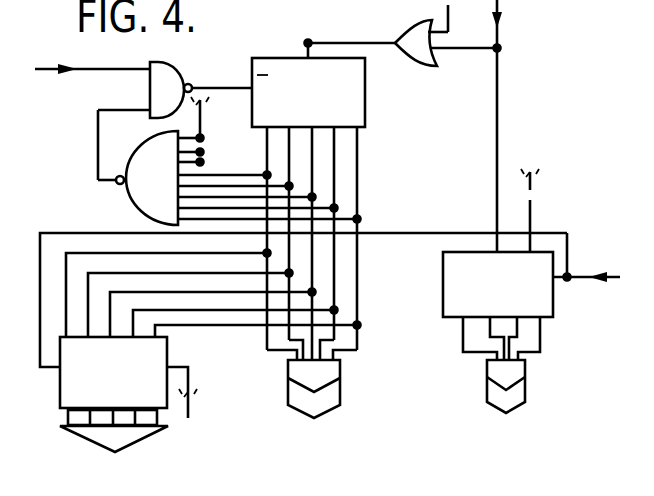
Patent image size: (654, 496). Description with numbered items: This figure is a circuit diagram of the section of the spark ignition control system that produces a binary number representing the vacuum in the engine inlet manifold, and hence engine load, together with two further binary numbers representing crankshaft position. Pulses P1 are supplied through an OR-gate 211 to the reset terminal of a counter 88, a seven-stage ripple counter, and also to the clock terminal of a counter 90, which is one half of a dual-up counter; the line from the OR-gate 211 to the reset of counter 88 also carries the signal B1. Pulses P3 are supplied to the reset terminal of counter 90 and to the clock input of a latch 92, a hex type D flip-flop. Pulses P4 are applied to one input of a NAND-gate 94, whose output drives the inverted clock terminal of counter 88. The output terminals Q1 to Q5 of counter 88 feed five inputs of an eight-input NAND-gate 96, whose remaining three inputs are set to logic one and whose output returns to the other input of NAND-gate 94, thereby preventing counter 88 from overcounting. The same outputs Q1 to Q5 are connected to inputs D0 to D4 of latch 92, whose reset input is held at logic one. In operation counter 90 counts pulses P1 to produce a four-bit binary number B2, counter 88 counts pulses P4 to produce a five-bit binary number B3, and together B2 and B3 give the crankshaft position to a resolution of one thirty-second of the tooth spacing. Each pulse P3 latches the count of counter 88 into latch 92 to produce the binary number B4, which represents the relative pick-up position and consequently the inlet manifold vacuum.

The counter 88 is at (287, 68).
The counter 90 is at (443, 277).
The latch 92 is at (62, 382).
The NAND-gate 94 is at (160, 76).
The NAND-gate 96 is at (137, 147).
The OR-gate 211 is at (413, 63).
The binary signal output B1 is at (351, 21).
The binary number B2 is at (506, 407).
The binary number B3 is at (312, 398).
The binary number B4 is at (114, 448).
The pulses P1 is at (510, 126).
The pulses P3 is at (586, 294).
The pulses P4 is at (92, 54).